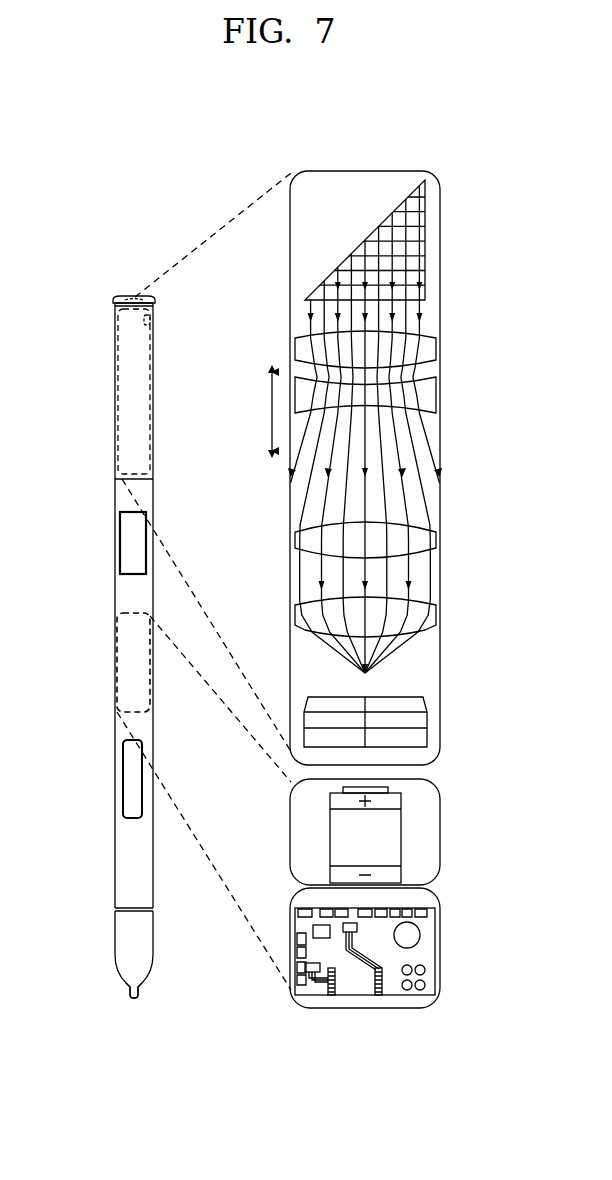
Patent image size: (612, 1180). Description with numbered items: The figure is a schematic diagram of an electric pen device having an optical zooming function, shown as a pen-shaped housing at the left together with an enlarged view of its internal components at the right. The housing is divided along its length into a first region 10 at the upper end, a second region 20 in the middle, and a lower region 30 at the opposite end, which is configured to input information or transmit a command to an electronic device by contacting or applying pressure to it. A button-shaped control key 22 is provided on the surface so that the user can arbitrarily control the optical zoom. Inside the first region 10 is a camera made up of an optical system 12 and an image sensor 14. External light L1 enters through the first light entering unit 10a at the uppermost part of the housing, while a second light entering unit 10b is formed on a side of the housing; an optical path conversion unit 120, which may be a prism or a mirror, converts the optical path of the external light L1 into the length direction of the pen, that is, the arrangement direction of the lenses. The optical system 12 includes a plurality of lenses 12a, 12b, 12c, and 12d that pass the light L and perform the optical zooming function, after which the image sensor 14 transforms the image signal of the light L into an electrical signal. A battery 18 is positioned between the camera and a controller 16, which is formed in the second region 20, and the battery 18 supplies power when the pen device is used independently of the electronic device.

The first region 10 is at (128, 383).
The first light entering unit 10a is at (129, 296).
The second light entering unit 10b is at (149, 321).
The second region 20 is at (120, 660).
The control key 22 is at (128, 538).
The lower region 30 is at (134, 975).
The optical path conversion unit 120 is at (428, 244).
The external light L1 is at (430, 271).
The optical system 12 is at (403, 486).
The lens 12a is at (436, 348).
The lens 12b is at (436, 395).
The lens 12c is at (436, 541).
The lens 12d is at (436, 616).
The external light L is at (441, 582).
The image sensor 14 is at (427, 714).
The battery 18 is at (398, 840).
The controller 16 is at (428, 958).